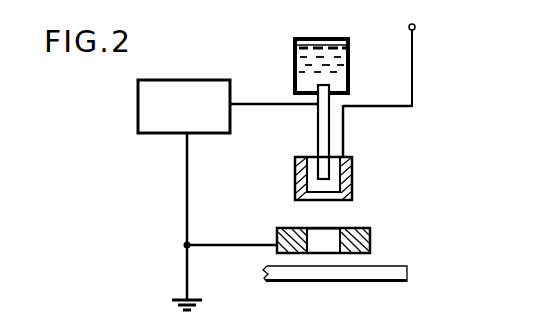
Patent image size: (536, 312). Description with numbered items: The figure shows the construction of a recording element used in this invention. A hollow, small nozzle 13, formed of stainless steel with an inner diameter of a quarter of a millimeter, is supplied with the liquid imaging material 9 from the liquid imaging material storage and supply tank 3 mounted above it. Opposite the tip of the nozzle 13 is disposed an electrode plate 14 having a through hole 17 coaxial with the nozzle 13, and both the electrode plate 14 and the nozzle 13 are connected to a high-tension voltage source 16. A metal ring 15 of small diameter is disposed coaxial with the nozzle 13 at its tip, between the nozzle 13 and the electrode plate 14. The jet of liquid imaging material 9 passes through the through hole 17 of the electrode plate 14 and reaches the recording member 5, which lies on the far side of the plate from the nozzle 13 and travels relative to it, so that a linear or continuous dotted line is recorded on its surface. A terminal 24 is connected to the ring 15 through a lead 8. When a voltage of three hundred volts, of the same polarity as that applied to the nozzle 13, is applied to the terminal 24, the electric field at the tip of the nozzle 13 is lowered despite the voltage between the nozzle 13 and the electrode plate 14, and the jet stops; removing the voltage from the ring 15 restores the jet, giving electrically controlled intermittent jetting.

The liquid imaging material storage and supply tank 3 is at (293, 58).
The recording member 5 is at (408, 271).
The lead 8 is at (414, 60).
The liquid imaging material 9 is at (322, 45).
The nozzle 13 is at (317, 128).
The electrode plate 14 is at (371, 238).
The metal ring 15 is at (353, 175).
The high-tension voltage source 16 is at (138, 104).
The through hole 17 is at (334, 228).
The terminal 24 is at (428, 23).